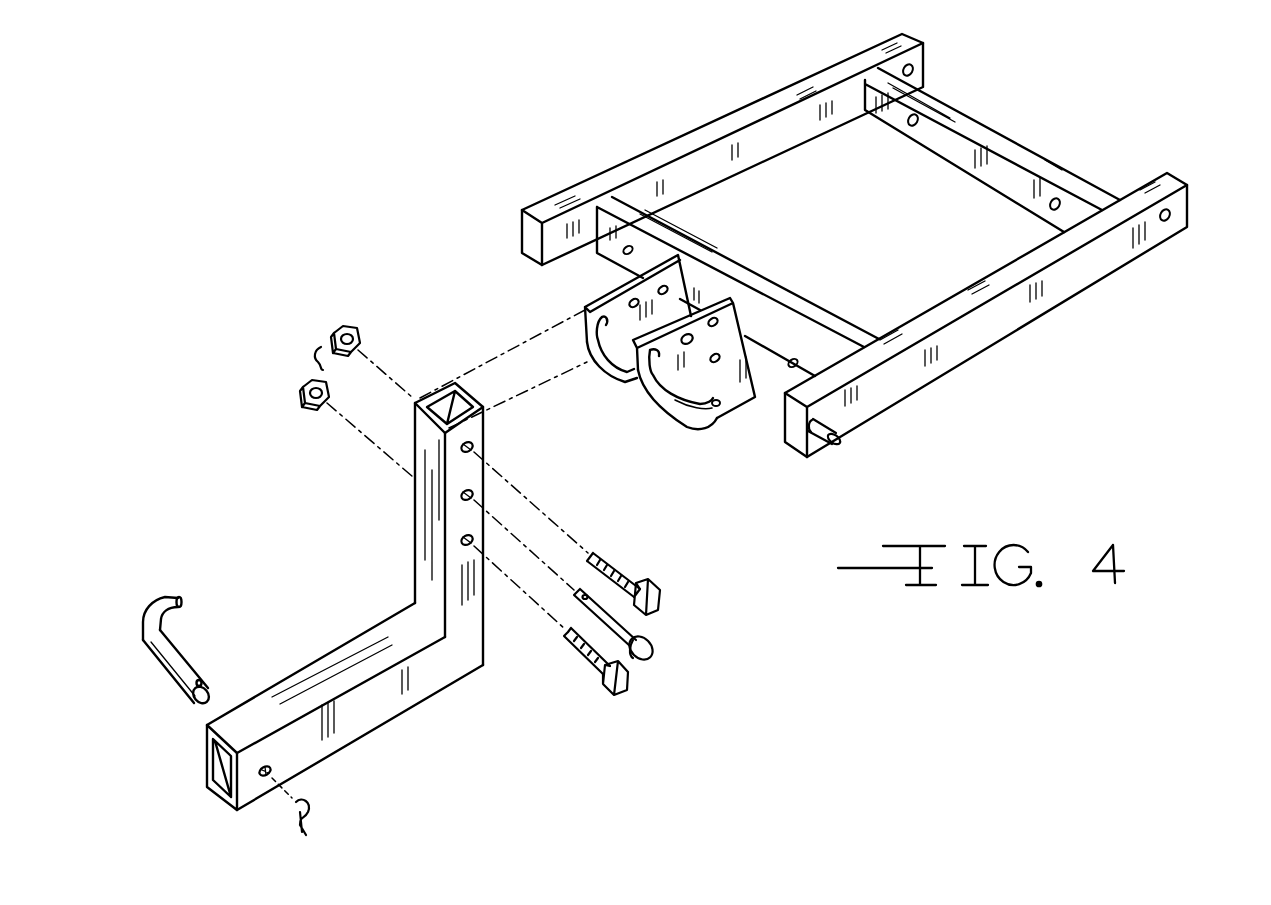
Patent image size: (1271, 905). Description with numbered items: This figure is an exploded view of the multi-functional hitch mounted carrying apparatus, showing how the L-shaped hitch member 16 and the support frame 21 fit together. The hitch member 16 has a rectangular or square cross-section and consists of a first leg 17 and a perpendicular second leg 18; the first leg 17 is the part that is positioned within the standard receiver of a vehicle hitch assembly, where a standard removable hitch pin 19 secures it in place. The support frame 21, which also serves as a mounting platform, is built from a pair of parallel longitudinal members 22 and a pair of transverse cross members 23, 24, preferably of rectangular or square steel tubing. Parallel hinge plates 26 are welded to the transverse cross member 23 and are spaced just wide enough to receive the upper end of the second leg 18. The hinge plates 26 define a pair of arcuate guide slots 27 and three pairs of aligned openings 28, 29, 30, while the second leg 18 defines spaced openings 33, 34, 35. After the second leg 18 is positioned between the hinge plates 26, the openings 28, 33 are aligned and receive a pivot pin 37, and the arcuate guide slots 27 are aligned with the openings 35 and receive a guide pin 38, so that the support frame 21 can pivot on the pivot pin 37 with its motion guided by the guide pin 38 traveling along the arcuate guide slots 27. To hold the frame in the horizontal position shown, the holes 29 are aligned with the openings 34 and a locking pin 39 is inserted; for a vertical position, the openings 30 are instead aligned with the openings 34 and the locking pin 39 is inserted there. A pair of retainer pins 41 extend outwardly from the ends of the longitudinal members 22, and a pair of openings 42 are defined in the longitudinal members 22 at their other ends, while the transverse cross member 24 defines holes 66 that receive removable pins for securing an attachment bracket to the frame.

The hitch member 16 is at (436, 714).
The first leg 17 is at (370, 740).
The second leg 18 is at (415, 511).
The hitch pin 19 is at (157, 654).
The support frame 21 is at (1042, 330).
The longitudinal members 22 is at (686, 134).
The transverse cross member 23 is at (748, 300).
The transverse cross member 24 is at (1018, 142).
The hinge plates 26 is at (588, 295).
The arcuate guide slots 27 is at (609, 378).
The openings 28 is at (663, 287).
The holes 29 is at (670, 289).
The openings 30 is at (634, 304).
The opening 33 is at (473, 446).
The openings 34 is at (473, 494).
The openings 35 is at (473, 541).
The pivot pin 37 is at (638, 582).
The guide pin 38 is at (598, 679).
The locking pin 39 is at (636, 631).
The retainer pins 41 is at (840, 440).
The openings 42 is at (912, 69).
The holes 66 is at (912, 125).